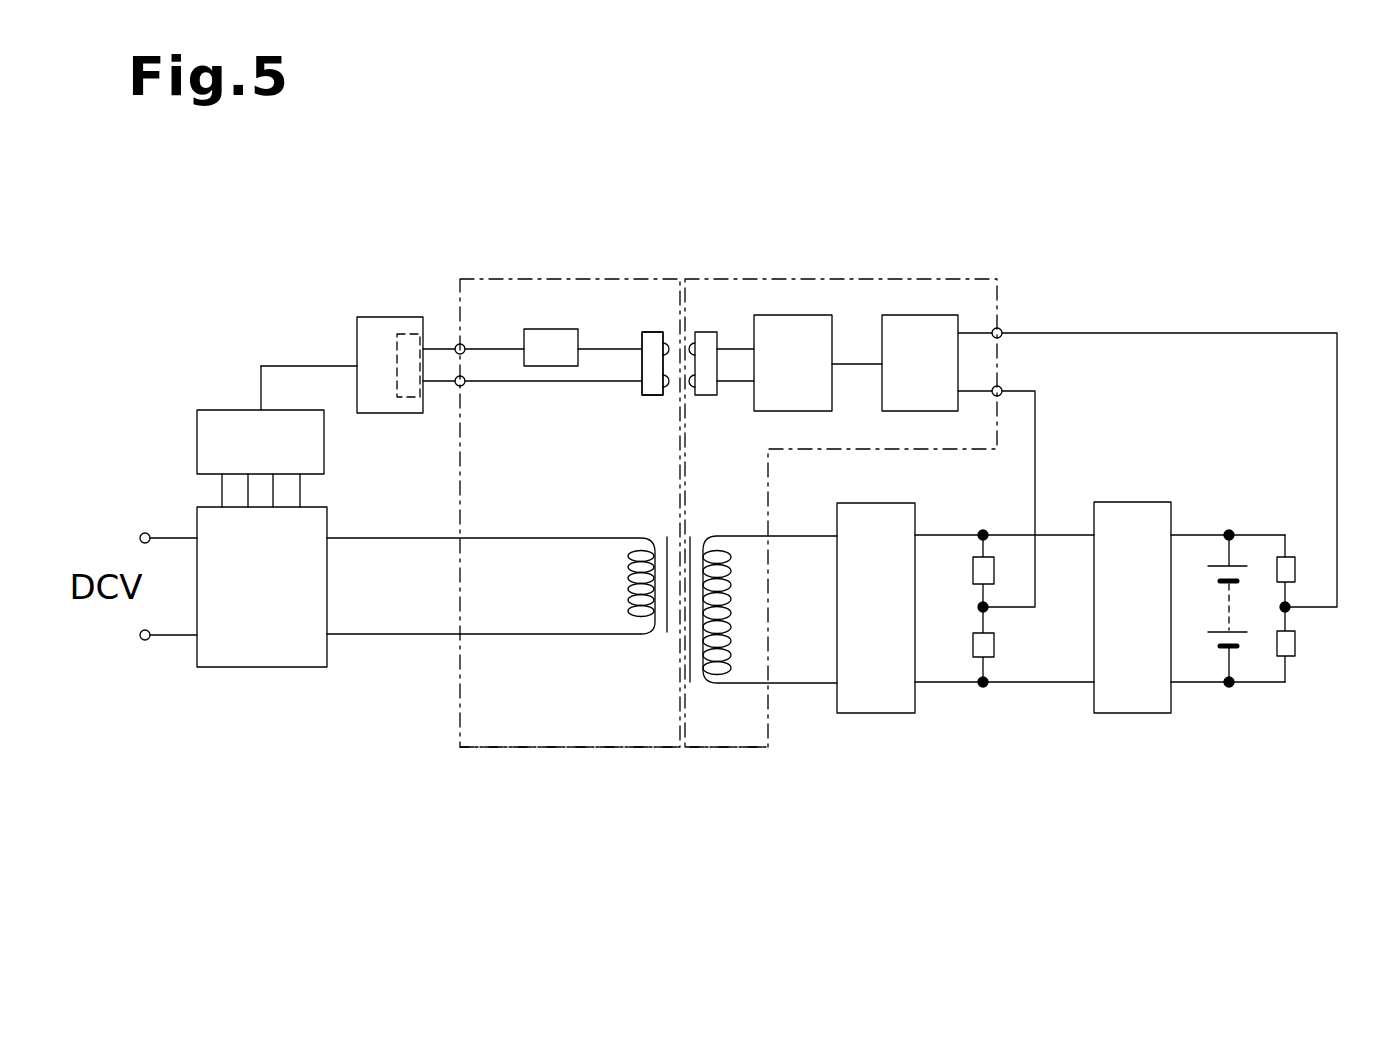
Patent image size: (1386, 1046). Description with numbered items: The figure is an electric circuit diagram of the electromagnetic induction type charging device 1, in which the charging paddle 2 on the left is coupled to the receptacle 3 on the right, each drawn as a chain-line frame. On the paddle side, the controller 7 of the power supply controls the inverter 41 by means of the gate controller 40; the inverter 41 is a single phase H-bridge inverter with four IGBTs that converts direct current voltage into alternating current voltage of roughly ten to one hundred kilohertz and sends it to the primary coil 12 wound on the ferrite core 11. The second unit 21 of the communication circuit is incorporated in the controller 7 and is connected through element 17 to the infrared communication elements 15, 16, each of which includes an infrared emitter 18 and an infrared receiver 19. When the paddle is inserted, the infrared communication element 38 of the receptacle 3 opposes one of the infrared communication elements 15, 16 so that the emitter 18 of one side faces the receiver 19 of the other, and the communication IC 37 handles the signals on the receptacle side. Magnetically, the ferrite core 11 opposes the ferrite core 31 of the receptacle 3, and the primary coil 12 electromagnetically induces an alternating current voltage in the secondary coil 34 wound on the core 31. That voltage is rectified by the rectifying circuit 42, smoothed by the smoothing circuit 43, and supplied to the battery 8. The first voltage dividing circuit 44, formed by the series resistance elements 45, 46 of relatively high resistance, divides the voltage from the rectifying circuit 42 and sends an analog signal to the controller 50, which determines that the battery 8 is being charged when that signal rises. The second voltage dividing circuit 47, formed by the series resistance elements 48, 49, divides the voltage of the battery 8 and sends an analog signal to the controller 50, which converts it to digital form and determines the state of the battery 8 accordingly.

The charging device 1 is at (604, 750).
The charging paddle 2 is at (479, 750).
The receptacle 3 is at (762, 750).
The controller 7 is at (391, 317).
The battery 8 is at (1229, 605).
The ferrite core 11 is at (666, 633).
The primary coil 12 is at (630, 635).
The infrared communication element 15 is at (640, 333).
The infrared communication element 16 is at (620, 310).
The resistor 17 is at (547, 329).
The infrared emitter 18 is at (666, 333).
The infrared receiver 19 is at (694, 333).
The second unit 21 is at (398, 397).
The ferrite core 31 is at (691, 683).
The secondary coil 34 is at (737, 684).
The communication IC 37 is at (774, 383).
The infrared communication element 38 is at (717, 333).
The gate controller 40 is at (242, 461).
The inverter 41 is at (243, 605).
The rectifying circuit 42 is at (857, 626).
The smoothing circuit 43 is at (1113, 626).
The first voltage dividing circuit 44 is at (956, 654).
The resistance element 45 is at (973, 568).
The resistance element 46 is at (956, 653).
The second voltage dividing circuit 47 is at (1315, 632).
The resistance element 48 is at (1296, 568).
The resistance element 49 is at (1296, 643).
The controller 50 is at (901, 383).